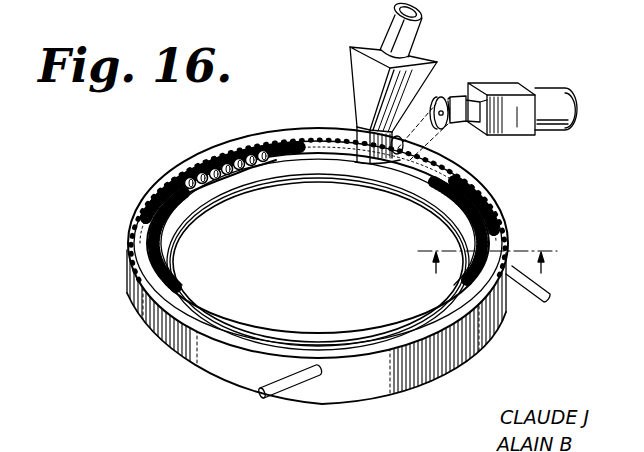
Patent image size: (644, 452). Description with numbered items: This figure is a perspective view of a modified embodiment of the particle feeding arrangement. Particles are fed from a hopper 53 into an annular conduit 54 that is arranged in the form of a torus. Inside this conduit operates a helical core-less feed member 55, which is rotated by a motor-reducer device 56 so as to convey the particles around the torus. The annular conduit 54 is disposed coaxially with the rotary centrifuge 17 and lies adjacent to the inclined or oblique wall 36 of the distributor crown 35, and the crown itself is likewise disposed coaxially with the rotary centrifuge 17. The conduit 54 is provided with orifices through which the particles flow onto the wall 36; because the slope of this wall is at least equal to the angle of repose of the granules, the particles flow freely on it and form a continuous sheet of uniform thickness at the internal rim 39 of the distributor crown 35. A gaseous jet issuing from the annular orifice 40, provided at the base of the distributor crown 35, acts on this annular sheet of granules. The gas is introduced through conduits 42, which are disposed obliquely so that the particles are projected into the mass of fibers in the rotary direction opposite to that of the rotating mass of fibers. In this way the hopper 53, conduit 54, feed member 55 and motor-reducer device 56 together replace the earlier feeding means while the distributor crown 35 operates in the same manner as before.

The rotary centrifuge 17 is at (484, 249).
The distributor crown 35 is at (187, 343).
The oblique wall 36 is at (167, 217).
The internal rim 39 is at (523, 7).
The annular orifice 40 is at (579, 12).
The conduits 42 is at (278, 390).
The hopper 53 is at (357, 62).
The annular conduit 54 is at (287, 150).
The helical core-less feed member 55 is at (220, 166).
The motor-reducer device 56 is at (487, 125).